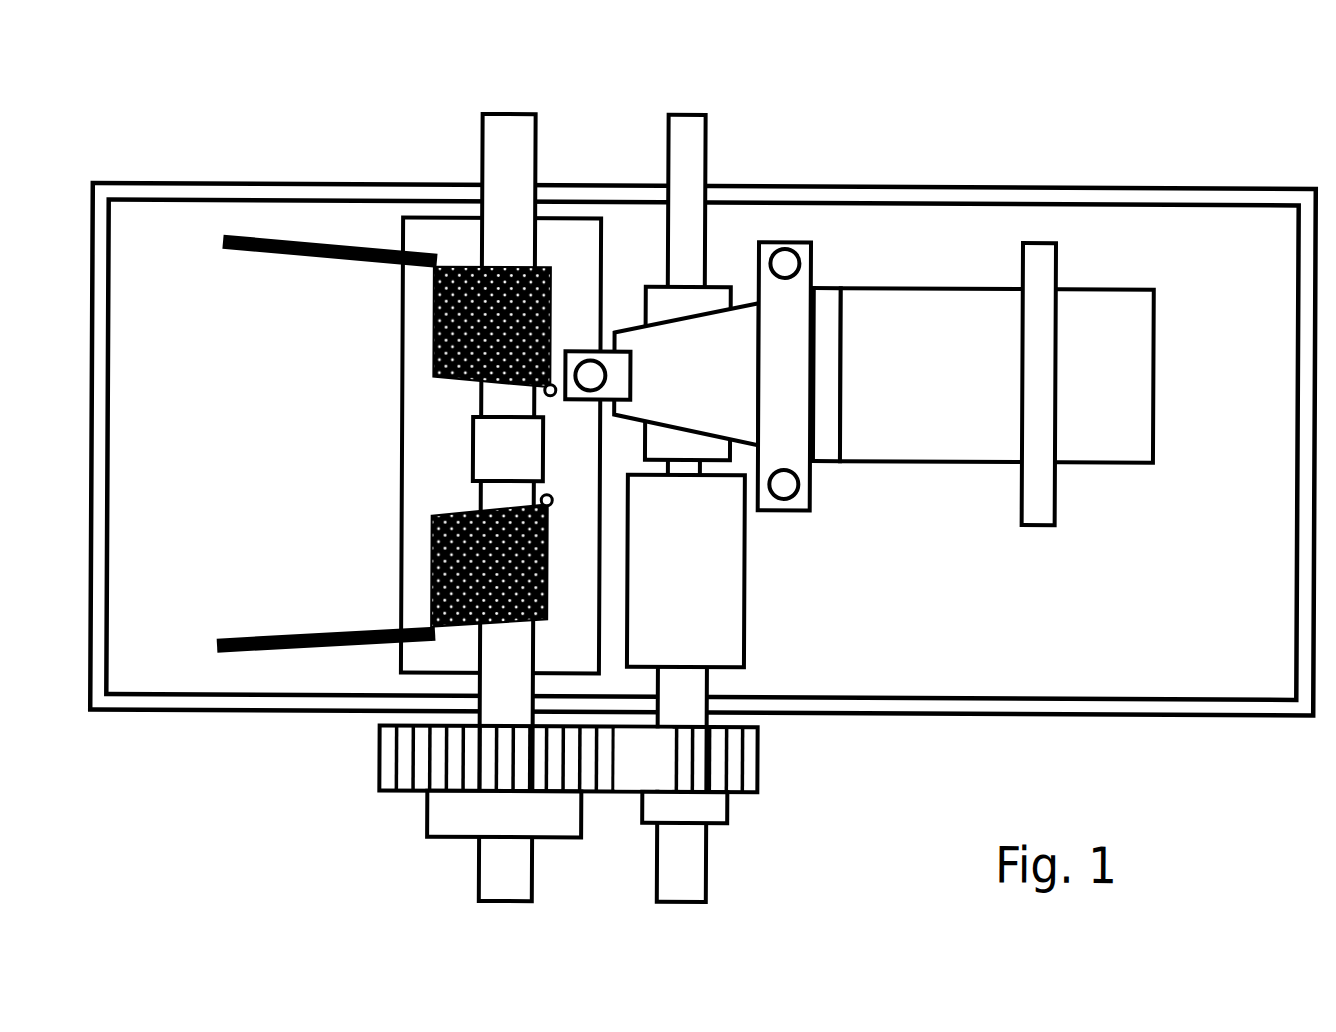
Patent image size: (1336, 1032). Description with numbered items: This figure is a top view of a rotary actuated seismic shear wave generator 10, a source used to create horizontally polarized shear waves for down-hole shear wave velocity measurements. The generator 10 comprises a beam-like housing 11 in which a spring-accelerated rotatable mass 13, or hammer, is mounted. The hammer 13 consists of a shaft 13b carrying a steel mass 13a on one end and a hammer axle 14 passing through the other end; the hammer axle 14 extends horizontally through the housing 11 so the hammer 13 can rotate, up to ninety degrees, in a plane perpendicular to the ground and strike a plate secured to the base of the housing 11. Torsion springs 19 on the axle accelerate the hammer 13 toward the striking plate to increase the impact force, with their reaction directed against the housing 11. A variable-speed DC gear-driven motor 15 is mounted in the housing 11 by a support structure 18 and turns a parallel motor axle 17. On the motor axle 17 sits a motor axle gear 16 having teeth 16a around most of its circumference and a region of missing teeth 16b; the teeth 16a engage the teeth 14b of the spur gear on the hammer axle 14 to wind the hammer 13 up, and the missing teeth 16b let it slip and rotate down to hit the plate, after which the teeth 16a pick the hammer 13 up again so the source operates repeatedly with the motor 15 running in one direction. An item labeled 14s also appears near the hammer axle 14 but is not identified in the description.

The rotary actuated seismic shear wave generator 10 is at (226, 94).
The housing 11 is at (1087, 185).
The spring-accelerated rotatable mass 13 is at (352, 411).
The steel mass 13a is at (400, 450).
The shaft 13b is at (472, 465).
The hammer axle 14 is at (534, 870).
The teeth 14b is at (398, 765).
The gear stop 14s is at (390, 794).
The variable-speed DC gear-driven motor 15 is at (748, 590).
The motor axle gear 16 is at (717, 793).
The teeth 16a is at (746, 765).
The missing teeth 16b is at (627, 784).
The motor axle 17 is at (710, 868).
The support structure 18 is at (1137, 514).
The torsion springs 19 is at (432, 338).